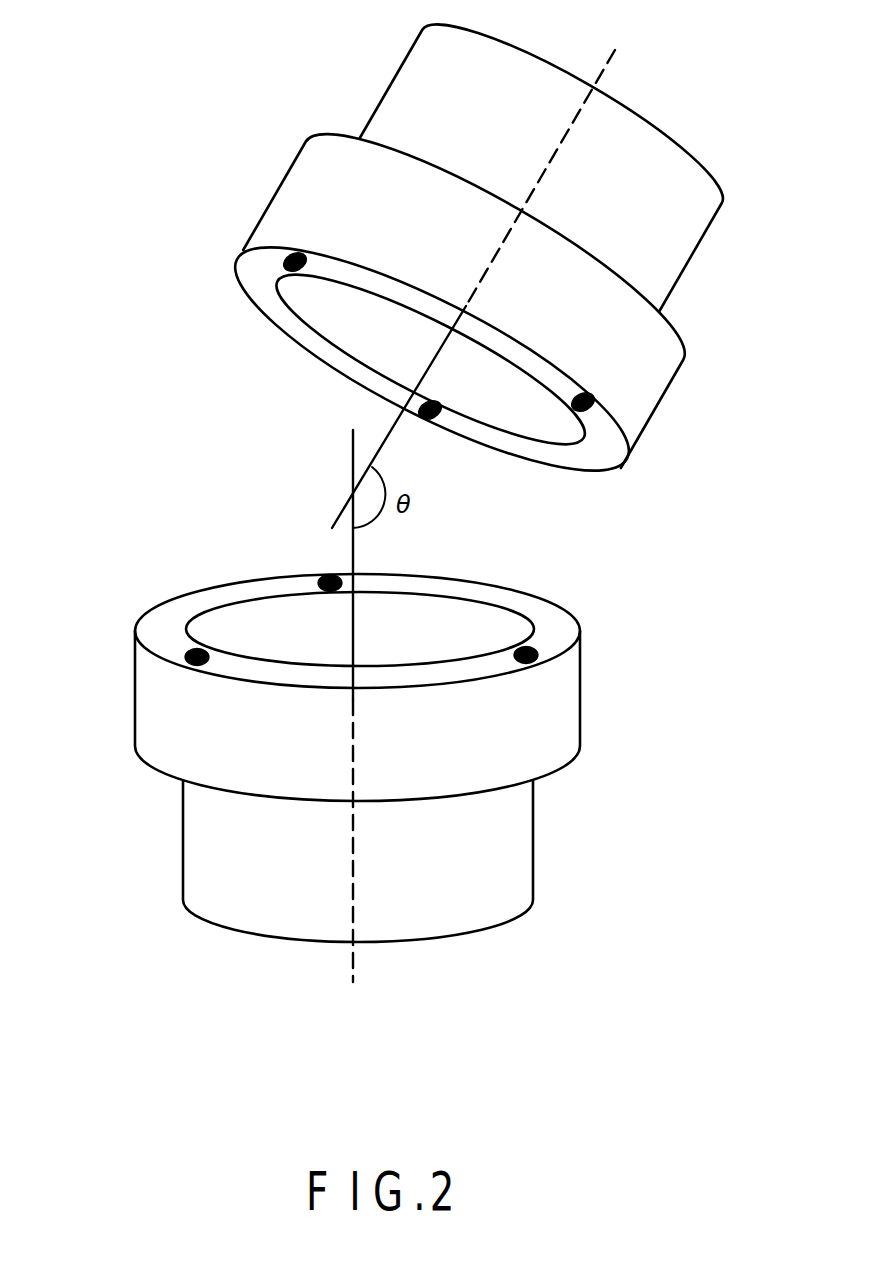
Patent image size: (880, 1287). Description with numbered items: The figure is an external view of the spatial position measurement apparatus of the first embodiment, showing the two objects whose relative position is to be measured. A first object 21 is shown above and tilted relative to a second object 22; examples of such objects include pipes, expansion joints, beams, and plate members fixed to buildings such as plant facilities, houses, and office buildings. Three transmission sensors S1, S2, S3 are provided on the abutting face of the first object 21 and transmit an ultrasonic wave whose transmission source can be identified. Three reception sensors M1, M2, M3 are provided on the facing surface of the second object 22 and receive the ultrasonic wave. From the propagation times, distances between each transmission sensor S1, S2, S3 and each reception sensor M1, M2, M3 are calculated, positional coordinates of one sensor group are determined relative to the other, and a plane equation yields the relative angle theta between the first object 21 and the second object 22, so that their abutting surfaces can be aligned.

The first object 21 is at (410, 95).
The second object 22 is at (152, 712).
The transmission sensor S1 is at (292, 268).
The transmission sensor S2 is at (427, 418).
The transmission sensor S3 is at (582, 410).
The reception sensor M1 is at (192, 652).
The reception sensor M2 is at (330, 582).
The reception sensor M3 is at (535, 647).